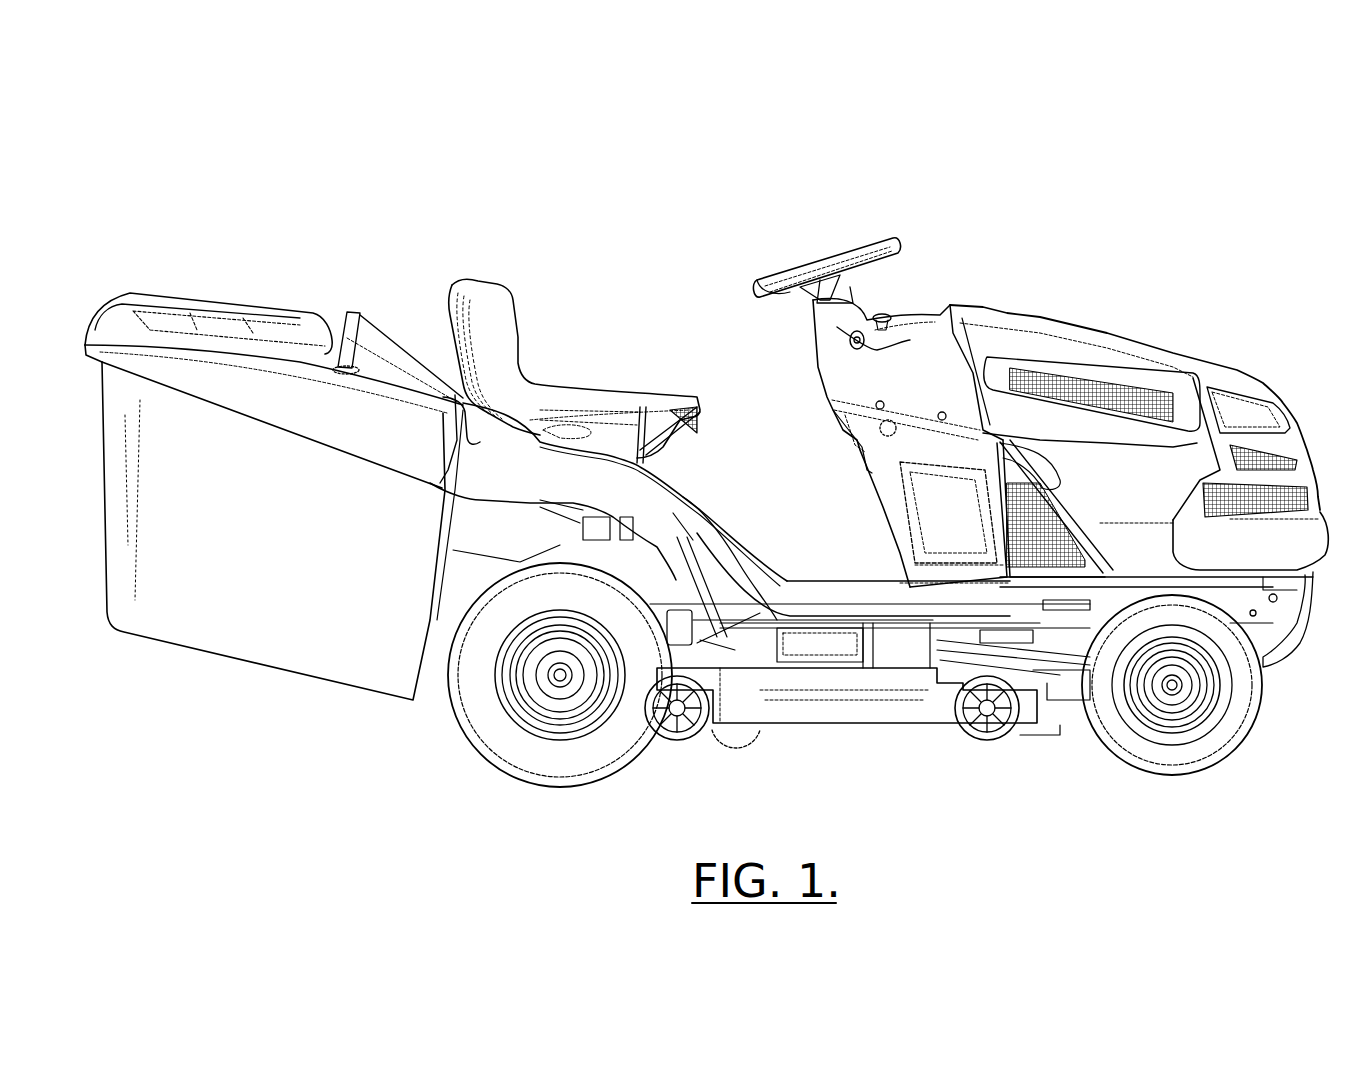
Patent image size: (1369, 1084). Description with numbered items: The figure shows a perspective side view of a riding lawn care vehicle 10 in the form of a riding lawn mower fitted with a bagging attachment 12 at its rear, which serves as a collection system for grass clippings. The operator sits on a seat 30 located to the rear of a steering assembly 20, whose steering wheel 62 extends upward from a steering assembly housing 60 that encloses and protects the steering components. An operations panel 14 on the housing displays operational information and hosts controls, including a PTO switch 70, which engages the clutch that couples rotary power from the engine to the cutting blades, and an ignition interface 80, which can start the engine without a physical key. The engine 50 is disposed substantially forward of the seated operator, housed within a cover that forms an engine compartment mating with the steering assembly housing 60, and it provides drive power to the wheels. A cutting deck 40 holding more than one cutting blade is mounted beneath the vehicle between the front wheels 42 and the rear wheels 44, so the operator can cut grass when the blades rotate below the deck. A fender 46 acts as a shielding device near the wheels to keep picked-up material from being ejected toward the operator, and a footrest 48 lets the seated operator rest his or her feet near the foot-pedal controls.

The riding lawn care vehicle 10 is at (1127, 182).
The bagging attachment 12 is at (200, 282).
The operations panel 14 is at (922, 367).
The steering assembly 20 is at (832, 242).
The seat 30 is at (490, 300).
The cutting deck 40 is at (862, 705).
The front wheels 42 is at (1215, 735).
The rear wheels 44 is at (605, 755).
The fender 46 is at (442, 388).
The footrest 48 is at (870, 590).
The engine 50 is at (1200, 344).
The steering assembly housing 60 is at (800, 362).
The steering wheel 62 is at (770, 282).
The PTO switch 70 is at (884, 308).
The ignition interface 80 is at (843, 333).